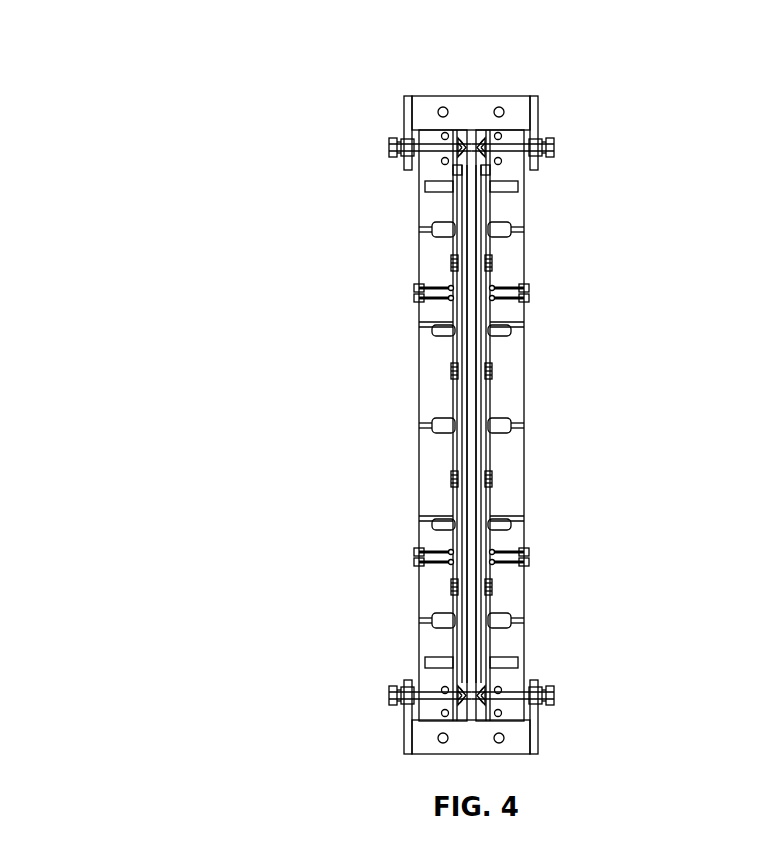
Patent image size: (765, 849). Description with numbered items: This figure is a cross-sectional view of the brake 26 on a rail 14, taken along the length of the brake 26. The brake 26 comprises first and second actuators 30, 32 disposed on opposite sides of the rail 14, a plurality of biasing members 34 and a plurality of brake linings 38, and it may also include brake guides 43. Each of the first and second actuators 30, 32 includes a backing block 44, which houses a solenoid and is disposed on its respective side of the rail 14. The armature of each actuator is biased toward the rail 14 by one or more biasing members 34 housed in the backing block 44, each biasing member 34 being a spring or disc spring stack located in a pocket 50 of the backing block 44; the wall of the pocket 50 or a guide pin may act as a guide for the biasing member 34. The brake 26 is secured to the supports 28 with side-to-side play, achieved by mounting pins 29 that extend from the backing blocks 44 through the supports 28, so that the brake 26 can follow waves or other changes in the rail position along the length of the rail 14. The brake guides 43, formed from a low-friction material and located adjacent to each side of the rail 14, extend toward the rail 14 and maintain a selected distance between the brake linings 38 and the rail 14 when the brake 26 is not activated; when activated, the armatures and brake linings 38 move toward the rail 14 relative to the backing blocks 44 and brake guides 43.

The brake 26 is at (156, 133).
The supports 28 is at (513, 108).
The mounting pins 29 is at (390, 143).
The first actuator 30 is at (459, 425).
The second actuator 32 is at (563, 424).
The biasing members 34 is at (464, 415).
The brake linings 38 is at (460, 252).
The brake guides 43 is at (456, 688).
The backing block 44 is at (427, 360).
The pocket 50 is at (510, 332).
The rail 14 is at (472, 572).